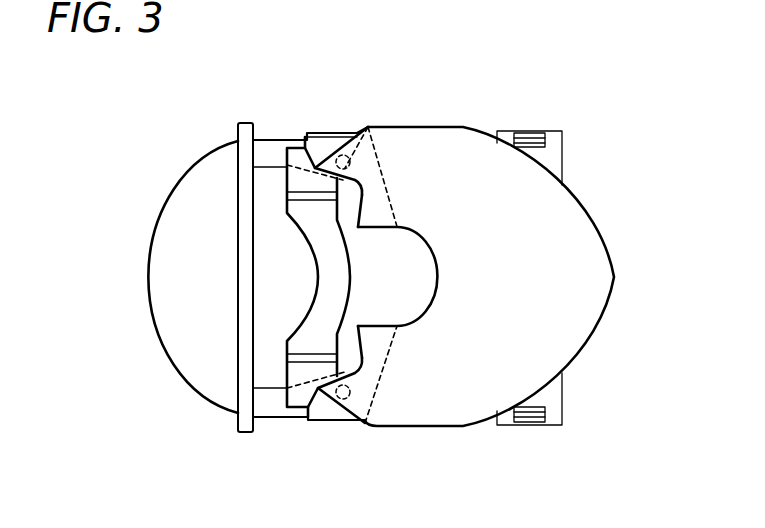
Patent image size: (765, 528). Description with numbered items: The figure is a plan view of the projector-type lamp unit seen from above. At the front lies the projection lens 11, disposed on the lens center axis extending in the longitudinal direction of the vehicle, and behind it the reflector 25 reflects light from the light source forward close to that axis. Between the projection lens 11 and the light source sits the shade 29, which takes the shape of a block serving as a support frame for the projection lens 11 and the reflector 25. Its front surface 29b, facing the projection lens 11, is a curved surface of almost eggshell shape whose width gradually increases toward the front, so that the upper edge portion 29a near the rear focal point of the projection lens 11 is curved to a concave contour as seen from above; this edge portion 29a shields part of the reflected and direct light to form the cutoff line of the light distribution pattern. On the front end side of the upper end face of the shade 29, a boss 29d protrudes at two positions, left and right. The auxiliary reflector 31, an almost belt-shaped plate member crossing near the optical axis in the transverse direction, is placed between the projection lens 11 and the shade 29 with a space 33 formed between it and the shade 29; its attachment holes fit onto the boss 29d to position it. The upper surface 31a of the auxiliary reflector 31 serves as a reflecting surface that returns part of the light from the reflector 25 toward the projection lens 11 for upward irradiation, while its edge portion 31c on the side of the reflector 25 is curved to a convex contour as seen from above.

The projection lens 11 is at (209, 367).
The reflector 25 is at (560, 230).
The shade 29 is at (286, 430).
The edge portion 29a is at (390, 250).
The front surface 29b is at (273, 280).
The boss 29d is at (368, 125).
The auxiliary reflector 31 is at (292, 249).
The upper surface 31a is at (328, 306).
The edge portion 31c is at (353, 270).
The space 33 is at (385, 304).